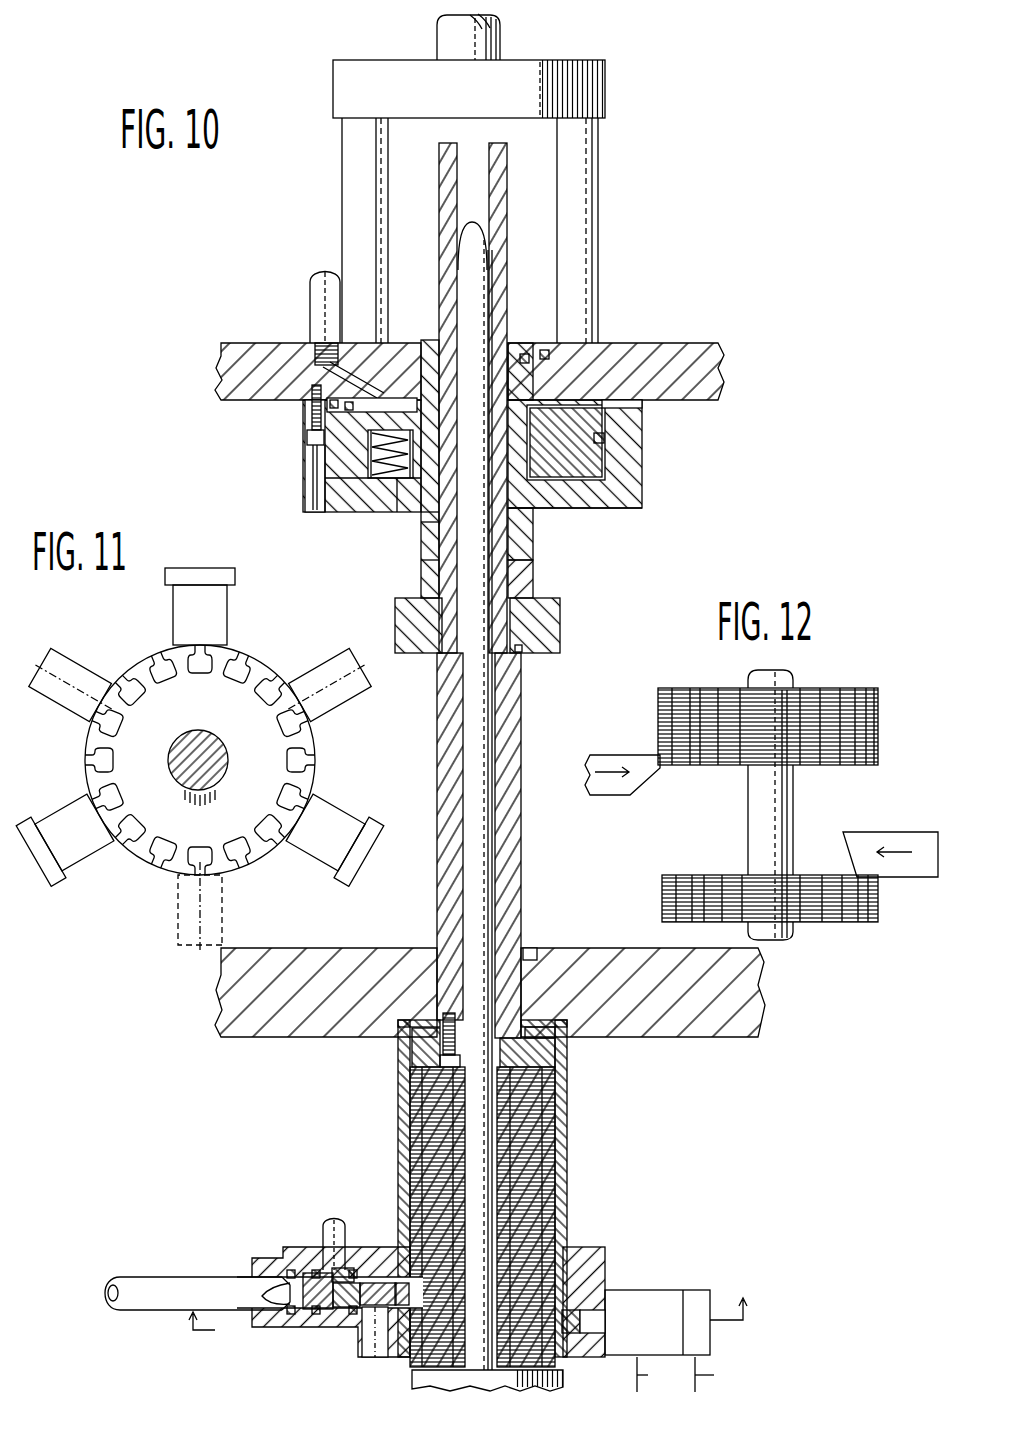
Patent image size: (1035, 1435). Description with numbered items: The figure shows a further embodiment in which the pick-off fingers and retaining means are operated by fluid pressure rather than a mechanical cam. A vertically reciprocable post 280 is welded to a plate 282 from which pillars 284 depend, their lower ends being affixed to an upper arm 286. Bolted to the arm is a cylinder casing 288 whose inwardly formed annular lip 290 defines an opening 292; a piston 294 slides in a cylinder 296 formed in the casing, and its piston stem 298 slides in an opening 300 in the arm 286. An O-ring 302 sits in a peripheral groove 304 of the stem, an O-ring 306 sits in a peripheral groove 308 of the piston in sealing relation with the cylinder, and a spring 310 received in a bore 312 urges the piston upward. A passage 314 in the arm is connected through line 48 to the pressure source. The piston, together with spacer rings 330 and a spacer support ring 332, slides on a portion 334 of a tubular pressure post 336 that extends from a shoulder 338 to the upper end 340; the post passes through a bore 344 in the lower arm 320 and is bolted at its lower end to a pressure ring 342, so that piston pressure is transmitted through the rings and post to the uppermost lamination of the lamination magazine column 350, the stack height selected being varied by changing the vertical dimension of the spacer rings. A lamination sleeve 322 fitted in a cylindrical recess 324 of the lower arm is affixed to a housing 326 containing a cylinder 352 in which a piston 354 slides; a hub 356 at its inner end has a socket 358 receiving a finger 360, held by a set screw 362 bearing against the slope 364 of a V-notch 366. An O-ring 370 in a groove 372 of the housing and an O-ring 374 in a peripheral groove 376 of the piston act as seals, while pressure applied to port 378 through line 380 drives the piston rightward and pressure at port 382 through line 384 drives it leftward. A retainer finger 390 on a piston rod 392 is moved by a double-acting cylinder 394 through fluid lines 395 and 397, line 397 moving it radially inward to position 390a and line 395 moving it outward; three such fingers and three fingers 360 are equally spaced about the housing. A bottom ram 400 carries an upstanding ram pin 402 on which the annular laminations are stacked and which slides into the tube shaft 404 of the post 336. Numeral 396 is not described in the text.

In FIG. 10, the post 280 is at (517, 42).
In FIG. 10, the plate 282 is at (600, 88).
In FIG. 10, the pillars 284 is at (592, 202).
In FIG. 10, the upper end 340 is at (512, 147).
In FIG. 10, the tube shaft 404 is at (457, 194).
In FIG. 10, the portion 334 is at (500, 290).
In FIG. 10, the line 48 is at (318, 297).
In FIG. 10, the passage 314 is at (330, 395).
In FIG. 10, the opening 300 is at (420, 340).
In FIG. 10, the piston stem 298 is at (521, 342).
In FIG. 10, the O-ring 302 is at (548, 348).
In FIG. 10, the upper arm 286 is at (672, 342).
In FIG. 10, the peripheral groove 304 is at (530, 385).
In FIG. 10, the cylinder 296 is at (310, 415).
In FIG. 10, the peripheral groove 308 is at (604, 428).
In FIG. 10, the O-ring 306 is at (602, 447).
In FIG. 10, the cylinder casing 288 is at (625, 468).
In FIG. 10, the piston 294 is at (640, 492).
In FIG. 10, the bore 312 is at (370, 462).
In FIG. 10, the annular lip 290 is at (375, 512).
In FIG. 10, the spring 310 is at (404, 512).
In FIG. 10, the opening 292 is at (545, 520).
In FIG. 10, the spacer rings 330 is at (540, 577).
In FIG. 10, the spacer support ring 332 is at (562, 626).
In FIG. 10, the shoulder 338 is at (522, 652).
In FIG. 10, the ram pin 402 is at (494, 731).
In FIG. 12, the ram pin 402 is at (790, 680).
In FIG. 10, the tubular pressure post 336 is at (512, 840).
In FIG. 10, the bore 344 is at (529, 948).
In FIG. 10, the lower arm 320 is at (562, 948).
In FIG. 10, the cylindrical recess 324 is at (565, 1040).
In FIG. 10, the pressure ring 342 is at (540, 1050).
In FIG. 10, the lamination sleeve 322 is at (567, 1172).
In FIG. 10, the lamination magazine column 350 is at (555, 1197).
In FIG. 11, the lamination magazine column 350 is at (314, 758).
In FIG. 12, the lamination magazine column 350 is at (880, 732).
In FIG. 10, the housing 326 is at (585, 1250).
In FIG. 10, the V-notch 366 is at (452, 1280).
In FIG. 10, the finger 360 is at (448, 1293).
In FIG. 11, the finger 360 is at (240, 893).
In FIG. 12, the finger 360 is at (617, 755).
In FIG. 10, the retainer finger 390 is at (575, 1310).
In FIG. 11, the retainer finger 390 is at (172, 612).
In FIG. 10, the double-acting cylinder 394 is at (692, 1296).
In FIG. 10, the pocket 396 is at (600, 1312).
In FIG. 10, the piston rod 392 is at (600, 1323).
In FIG. 10, the line 384 is at (333, 1217).
In FIG. 10, the socket 358 is at (400, 1283).
In FIG. 10, the port 382 is at (315, 1250).
In FIG. 10, the O-ring 370 is at (348, 1268).
In FIG. 10, the O-ring 374 is at (302, 1258).
In FIG. 10, the slope 364 is at (375, 1283).
In FIG. 10, the line 380 is at (160, 1300).
In FIG. 10, the port 378 is at (262, 1300).
In FIG. 10, the piston 354 is at (292, 1315).
In FIG. 10, the cylinder 352 is at (322, 1310).
In FIG. 10, the peripheral groove 376 is at (314, 1316).
In FIG. 10, the hub 356 is at (345, 1310).
In FIG. 10, the groove 372 is at (373, 1345).
In FIG. 10, the set screw 362 is at (386, 1345).
In FIG. 10, the bottom ram 400 is at (565, 1379).
In FIG. 10, the fluid line 395 is at (663, 1374).
In FIG. 10, the fluid line 397 is at (726, 1374).
In FIG. 12, the retainer finger position 390a is at (912, 880).